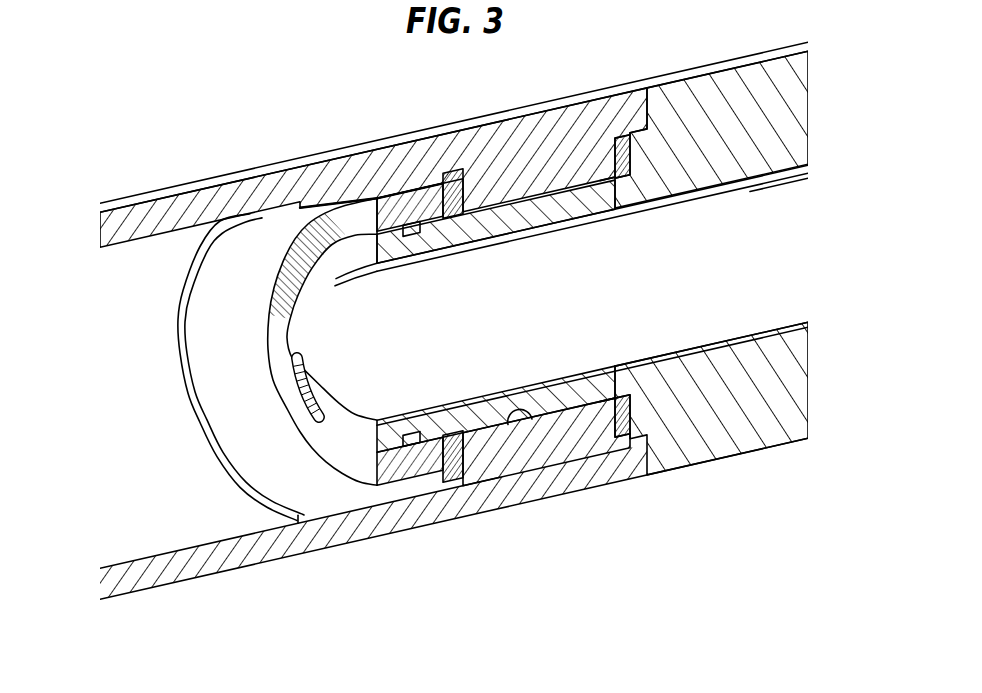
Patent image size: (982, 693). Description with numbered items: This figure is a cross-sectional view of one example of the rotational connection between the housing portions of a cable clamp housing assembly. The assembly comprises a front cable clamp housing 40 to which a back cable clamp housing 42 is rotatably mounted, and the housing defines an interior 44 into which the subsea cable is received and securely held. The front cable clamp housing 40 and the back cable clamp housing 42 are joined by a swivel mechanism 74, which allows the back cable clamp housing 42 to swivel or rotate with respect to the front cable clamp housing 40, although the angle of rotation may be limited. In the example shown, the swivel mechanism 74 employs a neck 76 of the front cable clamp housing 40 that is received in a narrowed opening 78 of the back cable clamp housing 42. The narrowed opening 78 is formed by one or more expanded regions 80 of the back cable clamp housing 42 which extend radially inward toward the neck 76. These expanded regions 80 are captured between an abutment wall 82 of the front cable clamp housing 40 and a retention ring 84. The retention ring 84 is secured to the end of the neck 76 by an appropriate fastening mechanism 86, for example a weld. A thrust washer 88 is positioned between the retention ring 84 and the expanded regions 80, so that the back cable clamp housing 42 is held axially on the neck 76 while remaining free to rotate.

The front cable clamp housing 40 is at (730, 432).
The back cable clamp housing 42 is at (230, 557).
The interior 44 is at (161, 489).
The swivel mechanism 74 is at (406, 106).
The neck 76 is at (437, 420).
The narrowed opening 78 is at (527, 414).
The expanded regions 80 is at (563, 427).
The abutment wall 82 is at (640, 452).
The retention ring 84 is at (403, 470).
The fastening mechanism 86 is at (294, 395).
The thrust washer 88 is at (466, 425).